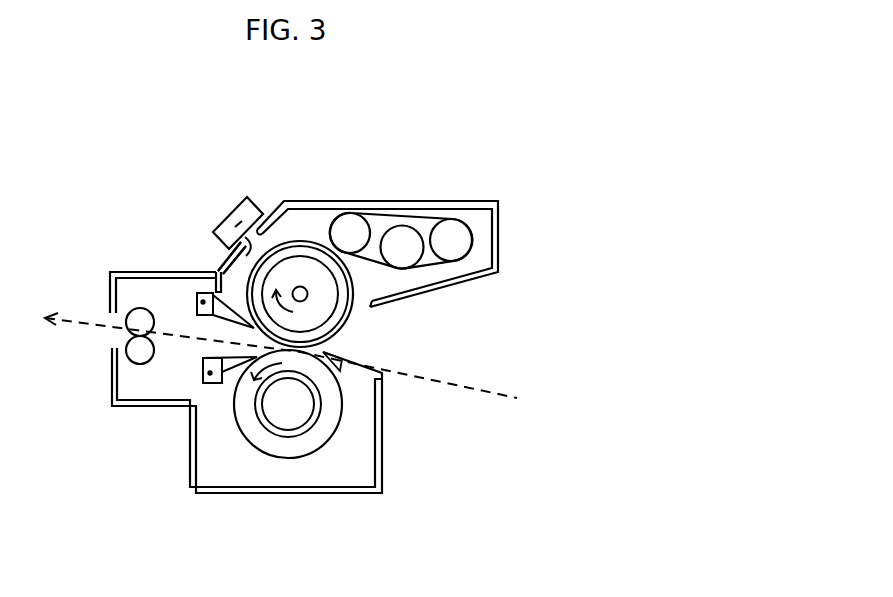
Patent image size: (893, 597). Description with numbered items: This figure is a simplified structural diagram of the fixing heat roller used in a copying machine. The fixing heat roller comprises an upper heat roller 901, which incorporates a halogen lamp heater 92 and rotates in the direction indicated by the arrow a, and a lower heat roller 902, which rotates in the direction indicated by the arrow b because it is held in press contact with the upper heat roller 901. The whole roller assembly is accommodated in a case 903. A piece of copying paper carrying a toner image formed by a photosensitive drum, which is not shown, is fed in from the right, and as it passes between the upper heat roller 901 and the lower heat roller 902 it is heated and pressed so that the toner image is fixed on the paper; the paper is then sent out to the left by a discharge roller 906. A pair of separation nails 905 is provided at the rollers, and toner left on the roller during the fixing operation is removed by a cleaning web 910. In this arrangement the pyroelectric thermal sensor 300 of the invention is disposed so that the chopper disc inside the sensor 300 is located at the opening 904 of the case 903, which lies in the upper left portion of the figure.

The heater 92 is at (300, 287).
The pyroelectric thermal sensor 300 is at (247, 197).
The upper heat roller 901 is at (320, 215).
The lower heat roller 902 is at (300, 458).
The case 903 is at (432, 203).
The opening 904 is at (222, 260).
The separation nails 905 is at (197, 301).
The discharge roller 906 is at (136, 357).
The cleaning web 910 is at (350, 233).